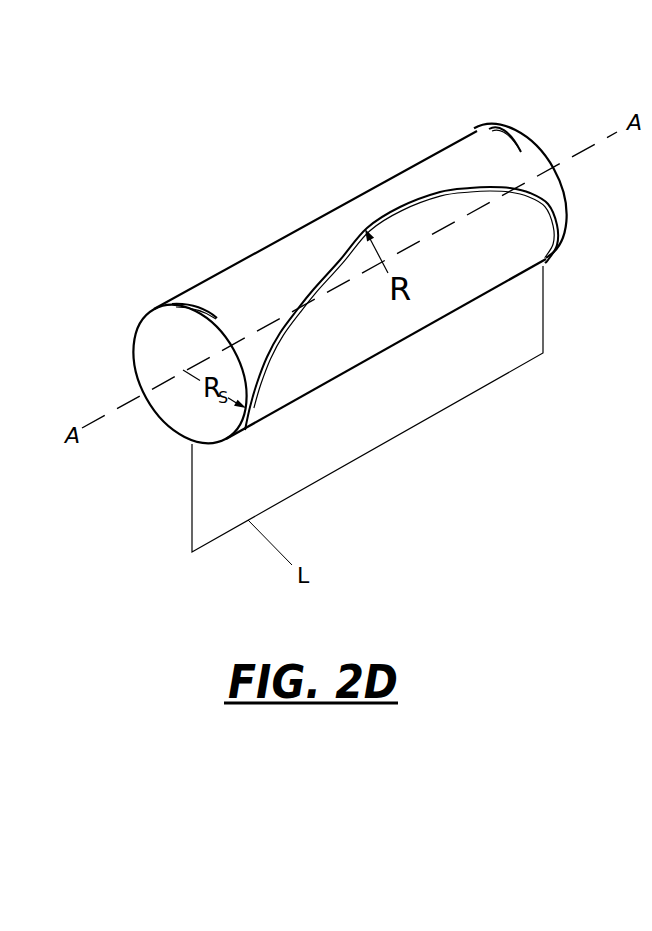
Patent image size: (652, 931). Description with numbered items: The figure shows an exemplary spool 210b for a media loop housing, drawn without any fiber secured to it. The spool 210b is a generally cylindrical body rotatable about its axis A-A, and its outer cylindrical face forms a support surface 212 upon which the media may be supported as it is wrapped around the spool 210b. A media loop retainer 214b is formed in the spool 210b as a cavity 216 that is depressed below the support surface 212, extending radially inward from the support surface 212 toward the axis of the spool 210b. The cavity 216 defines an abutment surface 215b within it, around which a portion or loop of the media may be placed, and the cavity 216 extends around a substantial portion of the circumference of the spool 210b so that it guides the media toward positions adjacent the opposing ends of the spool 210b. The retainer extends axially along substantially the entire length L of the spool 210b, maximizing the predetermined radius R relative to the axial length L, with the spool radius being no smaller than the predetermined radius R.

The spool 210b is at (263, 140).
The support surface 212 is at (257, 267).
The media loop retainer 214b is at (410, 207).
The abutment surface 215b is at (443, 192).
The cavity 216 is at (217, 318).